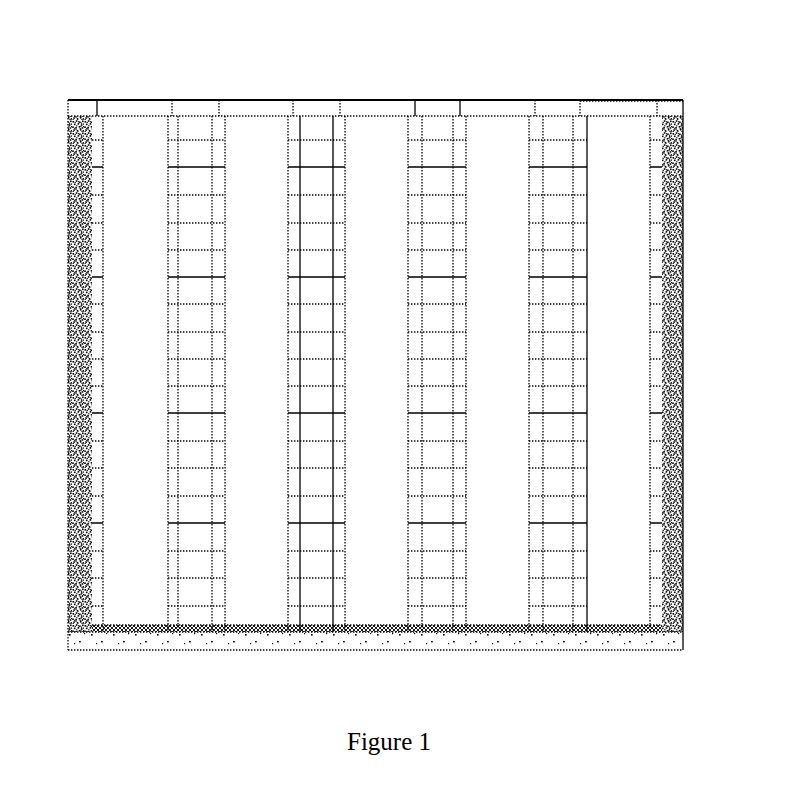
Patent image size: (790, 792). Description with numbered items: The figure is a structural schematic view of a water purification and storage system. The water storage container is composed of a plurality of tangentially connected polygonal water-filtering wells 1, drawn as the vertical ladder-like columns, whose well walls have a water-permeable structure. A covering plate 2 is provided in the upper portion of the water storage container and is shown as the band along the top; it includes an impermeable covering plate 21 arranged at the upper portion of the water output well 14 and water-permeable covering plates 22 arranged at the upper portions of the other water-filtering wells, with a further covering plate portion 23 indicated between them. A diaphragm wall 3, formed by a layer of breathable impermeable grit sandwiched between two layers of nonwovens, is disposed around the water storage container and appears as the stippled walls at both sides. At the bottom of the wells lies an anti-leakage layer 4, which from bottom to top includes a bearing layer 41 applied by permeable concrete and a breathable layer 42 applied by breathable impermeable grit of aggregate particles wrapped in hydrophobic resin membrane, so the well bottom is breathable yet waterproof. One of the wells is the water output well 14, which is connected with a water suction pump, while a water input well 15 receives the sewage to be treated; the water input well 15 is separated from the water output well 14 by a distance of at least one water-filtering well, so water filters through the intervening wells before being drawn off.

The water-filtering well 1 is at (493, 160).
The covering plate 2 is at (375, 78).
The impermeable covering plate 21 is at (617, 106).
The water-permeable covering plate 22 is at (130, 105).
The top connecting member 23 is at (557, 108).
The diaphragm wall 3 is at (92, 117).
The anti-leakage layer 4 is at (375, 664).
The bearing layer 41 is at (480, 638).
The breathable layer 42 is at (473, 632).
The water output well 14 is at (613, 593).
The water input well 15 is at (252, 598).